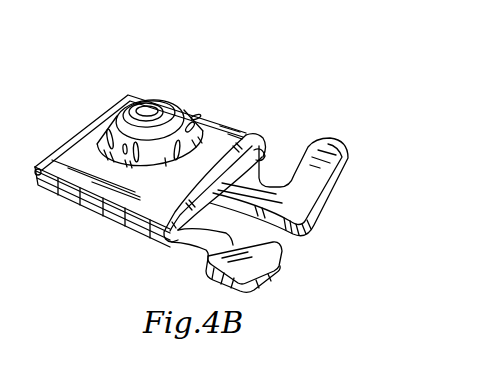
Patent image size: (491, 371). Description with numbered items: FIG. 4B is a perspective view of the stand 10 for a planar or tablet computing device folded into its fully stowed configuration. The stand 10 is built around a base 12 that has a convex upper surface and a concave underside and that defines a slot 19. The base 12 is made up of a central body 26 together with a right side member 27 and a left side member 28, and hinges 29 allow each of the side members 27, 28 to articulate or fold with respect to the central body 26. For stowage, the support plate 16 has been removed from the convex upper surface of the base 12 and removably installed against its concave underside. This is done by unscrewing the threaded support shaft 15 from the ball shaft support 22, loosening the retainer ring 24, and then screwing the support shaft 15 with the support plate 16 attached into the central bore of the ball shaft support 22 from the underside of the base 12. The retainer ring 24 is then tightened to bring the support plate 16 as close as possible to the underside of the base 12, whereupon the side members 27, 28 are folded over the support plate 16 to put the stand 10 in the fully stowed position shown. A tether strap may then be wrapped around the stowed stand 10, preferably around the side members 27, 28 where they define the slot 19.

The stand 10 is at (218, 77).
The base 12 is at (92, 117).
The support shaft 15 is at (150, 103).
The support plate 16 is at (258, 140).
The slot 19 is at (198, 247).
The ball shaft support 22 is at (178, 108).
The retainer ring 24 is at (112, 147).
The central body 26 is at (233, 133).
The right side member 27 is at (315, 173).
The left side member 28 is at (253, 258).
The hinges 29 is at (43, 188).